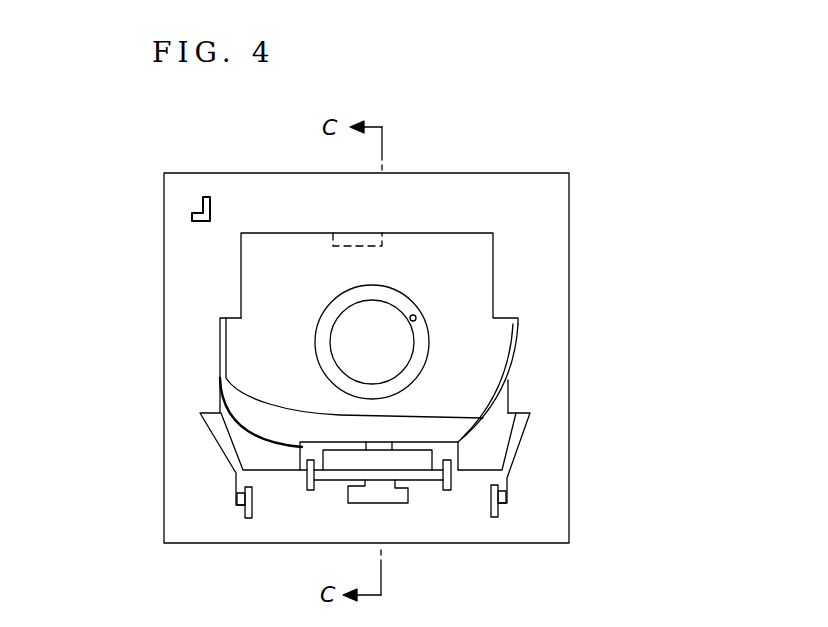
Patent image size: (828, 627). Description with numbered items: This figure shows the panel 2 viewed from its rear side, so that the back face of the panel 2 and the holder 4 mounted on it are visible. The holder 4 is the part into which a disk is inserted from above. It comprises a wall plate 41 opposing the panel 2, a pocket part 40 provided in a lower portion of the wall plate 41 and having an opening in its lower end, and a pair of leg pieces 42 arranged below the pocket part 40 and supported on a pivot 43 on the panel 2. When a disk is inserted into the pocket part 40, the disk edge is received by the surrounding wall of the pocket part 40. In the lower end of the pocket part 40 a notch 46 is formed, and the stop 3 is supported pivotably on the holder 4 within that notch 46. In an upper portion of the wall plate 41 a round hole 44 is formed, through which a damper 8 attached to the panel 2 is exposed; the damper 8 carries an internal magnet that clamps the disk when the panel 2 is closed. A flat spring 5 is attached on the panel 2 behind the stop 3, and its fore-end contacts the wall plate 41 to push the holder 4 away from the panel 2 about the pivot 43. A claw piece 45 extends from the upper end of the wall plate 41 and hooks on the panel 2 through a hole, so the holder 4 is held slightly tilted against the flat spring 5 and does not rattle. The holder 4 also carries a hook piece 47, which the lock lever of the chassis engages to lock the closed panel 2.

The panel 2 is at (553, 226).
The stop 3 is at (414, 462).
The holder 4 is at (646, 303).
The flat spring 5 is at (392, 498).
The damper 8 is at (367, 325).
The pocket part 40 is at (443, 422).
The wall plate 41 is at (498, 347).
The leg pieces 42 is at (235, 479).
The pivot 43 is at (240, 495).
The round hole 44 is at (415, 316).
The claw piece 45 is at (346, 240).
The notch 46 is at (302, 450).
The hook piece 47 is at (205, 197).